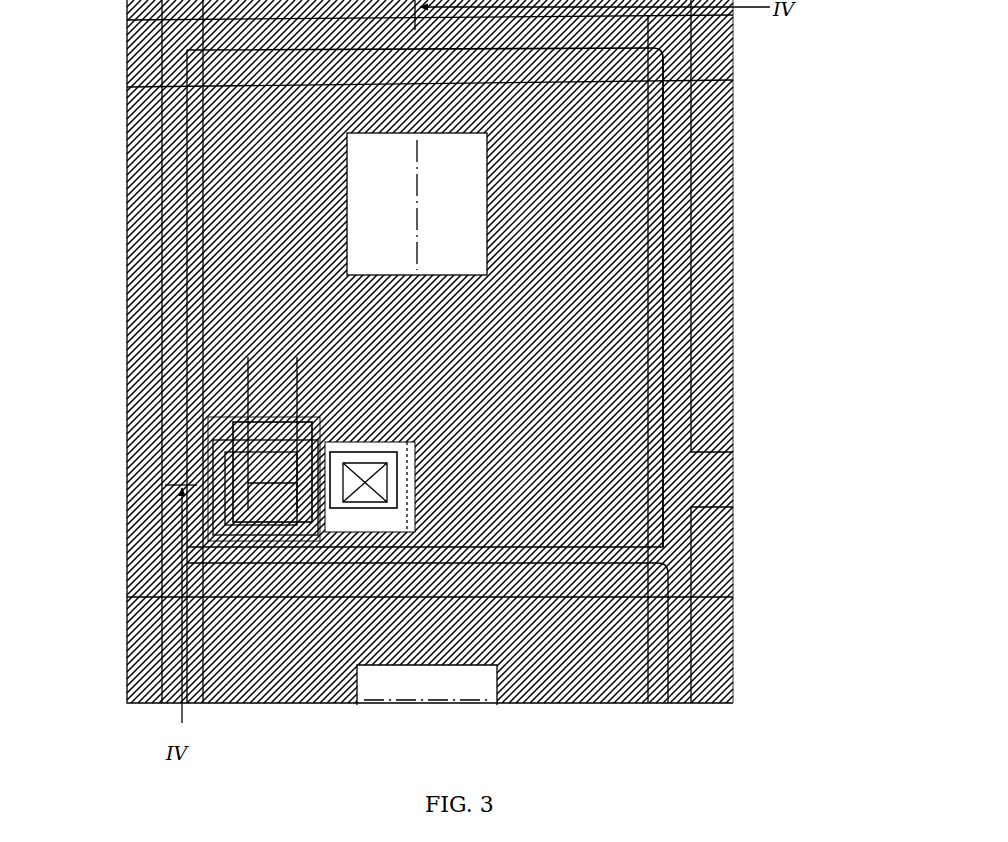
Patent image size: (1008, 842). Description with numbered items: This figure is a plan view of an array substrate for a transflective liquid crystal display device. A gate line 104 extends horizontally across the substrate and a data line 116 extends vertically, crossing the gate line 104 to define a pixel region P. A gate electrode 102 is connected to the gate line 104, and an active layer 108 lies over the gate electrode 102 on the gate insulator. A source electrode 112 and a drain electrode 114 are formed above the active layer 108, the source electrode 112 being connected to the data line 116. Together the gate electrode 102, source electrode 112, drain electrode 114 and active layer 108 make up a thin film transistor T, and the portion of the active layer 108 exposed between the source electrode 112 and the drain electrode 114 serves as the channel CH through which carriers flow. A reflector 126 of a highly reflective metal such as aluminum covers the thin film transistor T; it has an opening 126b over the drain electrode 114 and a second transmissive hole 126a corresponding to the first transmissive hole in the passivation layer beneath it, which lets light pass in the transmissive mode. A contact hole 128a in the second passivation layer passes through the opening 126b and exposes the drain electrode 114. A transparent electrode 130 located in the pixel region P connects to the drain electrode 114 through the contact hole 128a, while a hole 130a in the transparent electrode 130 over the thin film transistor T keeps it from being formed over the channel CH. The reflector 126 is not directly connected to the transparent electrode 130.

The gate electrode 102 is at (250, 370).
The gate line 104 is at (620, 588).
The active layer 108 is at (268, 568).
The source electrode 112 is at (197, 485).
The drain electrode 114 is at (326, 482).
The data line 116 is at (690, 333).
The reflector 126 is at (730, 263).
The second transmissive hole 126a is at (474, 188).
The opening 126b is at (420, 517).
The contact hole 128a is at (368, 503).
The transparent electrode 130 is at (673, 242).
The hole 130a is at (224, 462).
The pixel region P is at (618, 120).
The thin film transistor T is at (372, 416).
The channel CH is at (270, 417).